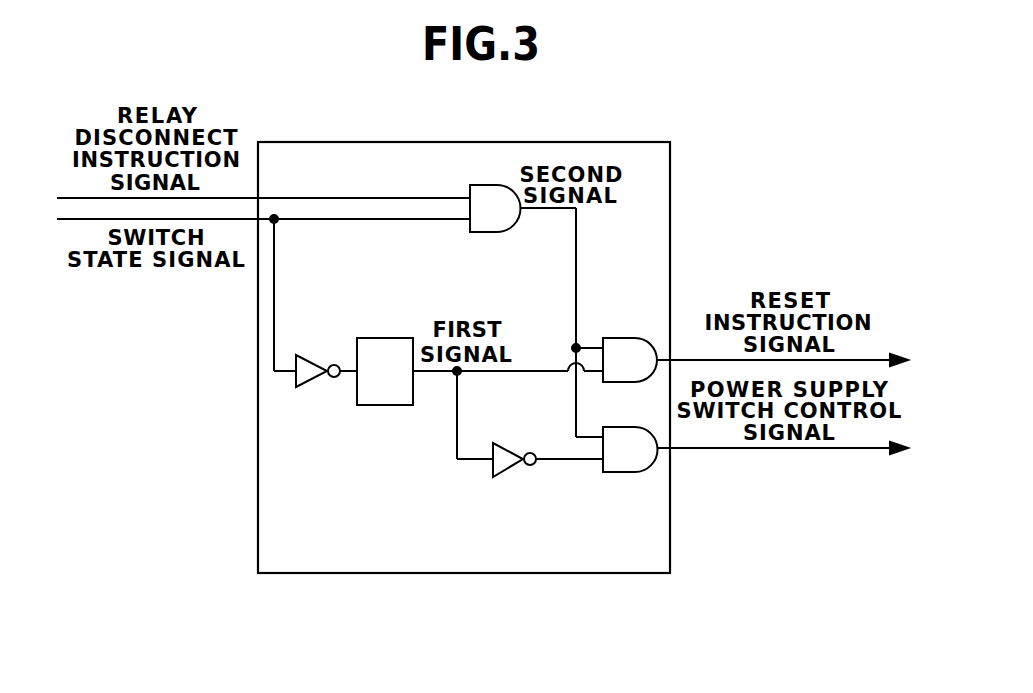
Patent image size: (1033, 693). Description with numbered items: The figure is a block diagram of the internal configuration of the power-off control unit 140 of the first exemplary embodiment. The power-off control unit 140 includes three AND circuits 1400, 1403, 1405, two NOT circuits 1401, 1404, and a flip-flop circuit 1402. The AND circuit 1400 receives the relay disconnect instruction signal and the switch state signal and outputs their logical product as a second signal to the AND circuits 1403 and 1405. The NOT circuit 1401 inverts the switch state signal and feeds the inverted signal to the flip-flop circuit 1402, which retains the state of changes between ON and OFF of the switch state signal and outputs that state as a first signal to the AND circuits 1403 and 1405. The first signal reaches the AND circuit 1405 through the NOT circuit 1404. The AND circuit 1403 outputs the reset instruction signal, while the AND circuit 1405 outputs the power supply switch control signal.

The power-off control unit 140 is at (466, 573).
The AND circuit 1400 is at (488, 232).
The NOT circuit 1401 is at (312, 354).
The flip-flop circuit 1402 is at (385, 405).
The AND circuit 1403 is at (622, 338).
The NOT circuit 1404 is at (507, 442).
The AND circuit 1405 is at (621, 472).